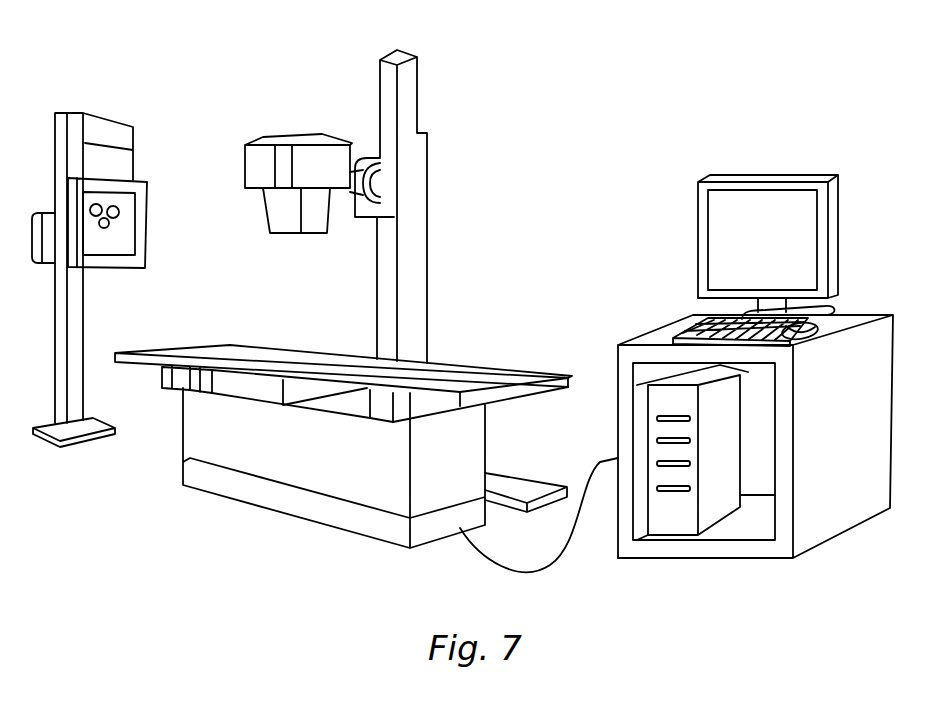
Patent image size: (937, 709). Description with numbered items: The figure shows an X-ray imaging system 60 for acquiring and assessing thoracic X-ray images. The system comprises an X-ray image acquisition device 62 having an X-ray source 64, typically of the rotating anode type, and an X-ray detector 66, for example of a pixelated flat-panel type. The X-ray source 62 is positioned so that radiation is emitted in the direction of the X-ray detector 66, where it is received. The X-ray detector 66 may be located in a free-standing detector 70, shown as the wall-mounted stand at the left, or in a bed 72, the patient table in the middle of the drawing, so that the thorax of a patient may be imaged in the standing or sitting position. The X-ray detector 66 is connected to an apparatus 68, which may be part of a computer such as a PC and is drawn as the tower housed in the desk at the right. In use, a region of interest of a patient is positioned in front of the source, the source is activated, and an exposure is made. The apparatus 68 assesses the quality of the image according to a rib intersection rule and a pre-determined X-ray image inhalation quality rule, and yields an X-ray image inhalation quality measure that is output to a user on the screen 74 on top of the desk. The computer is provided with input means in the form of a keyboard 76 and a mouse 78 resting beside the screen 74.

The X-ray imaging system 60 is at (447, 173).
The X-ray source 62 is at (263, 137).
The X-ray source 64 is at (278, 234).
The X-ray detector 66 is at (112, 232).
The apparatus 68 is at (720, 498).
The free-standing detector 70 is at (62, 147).
The bed 72 is at (270, 445).
The screen 74 is at (757, 204).
The keyboard 76 is at (717, 315).
The mouse 78 is at (817, 338).